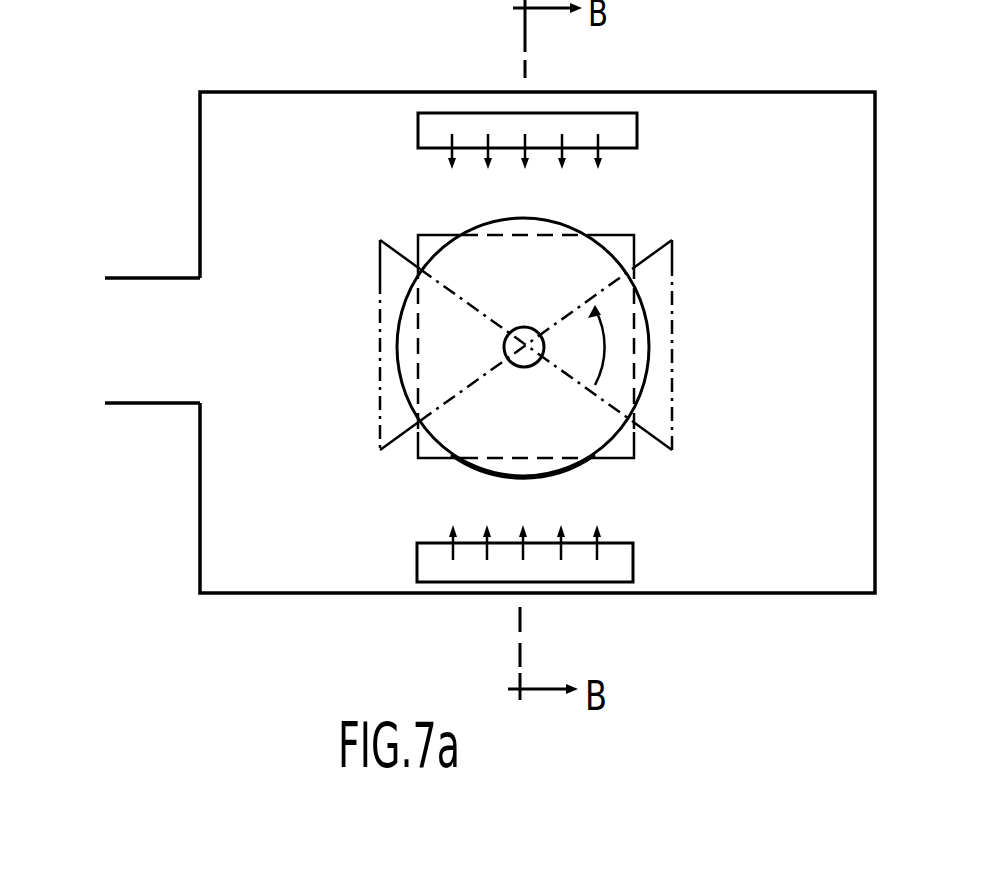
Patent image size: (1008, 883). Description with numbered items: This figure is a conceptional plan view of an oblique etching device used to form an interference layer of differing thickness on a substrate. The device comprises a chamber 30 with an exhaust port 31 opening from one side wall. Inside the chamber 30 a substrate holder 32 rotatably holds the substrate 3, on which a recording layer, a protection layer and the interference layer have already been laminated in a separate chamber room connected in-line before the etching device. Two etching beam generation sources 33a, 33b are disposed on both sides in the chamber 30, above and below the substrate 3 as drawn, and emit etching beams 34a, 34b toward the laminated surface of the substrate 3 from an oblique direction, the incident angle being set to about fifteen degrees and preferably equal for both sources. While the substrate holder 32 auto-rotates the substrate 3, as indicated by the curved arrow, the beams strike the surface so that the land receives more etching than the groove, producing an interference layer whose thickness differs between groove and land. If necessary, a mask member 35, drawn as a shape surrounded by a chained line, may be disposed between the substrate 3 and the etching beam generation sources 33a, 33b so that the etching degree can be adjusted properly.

The chamber 30 is at (315, 92).
The exhaust port 31 is at (98, 316).
The substrate holder 32 is at (628, 237).
The substrate 3 is at (579, 232).
The etching beam generation source 33a is at (470, 123).
The etching beam generation source 33b is at (467, 575).
The etching beam 34a is at (452, 160).
The etching beam 34b is at (452, 538).
The mask member 35 is at (673, 370).